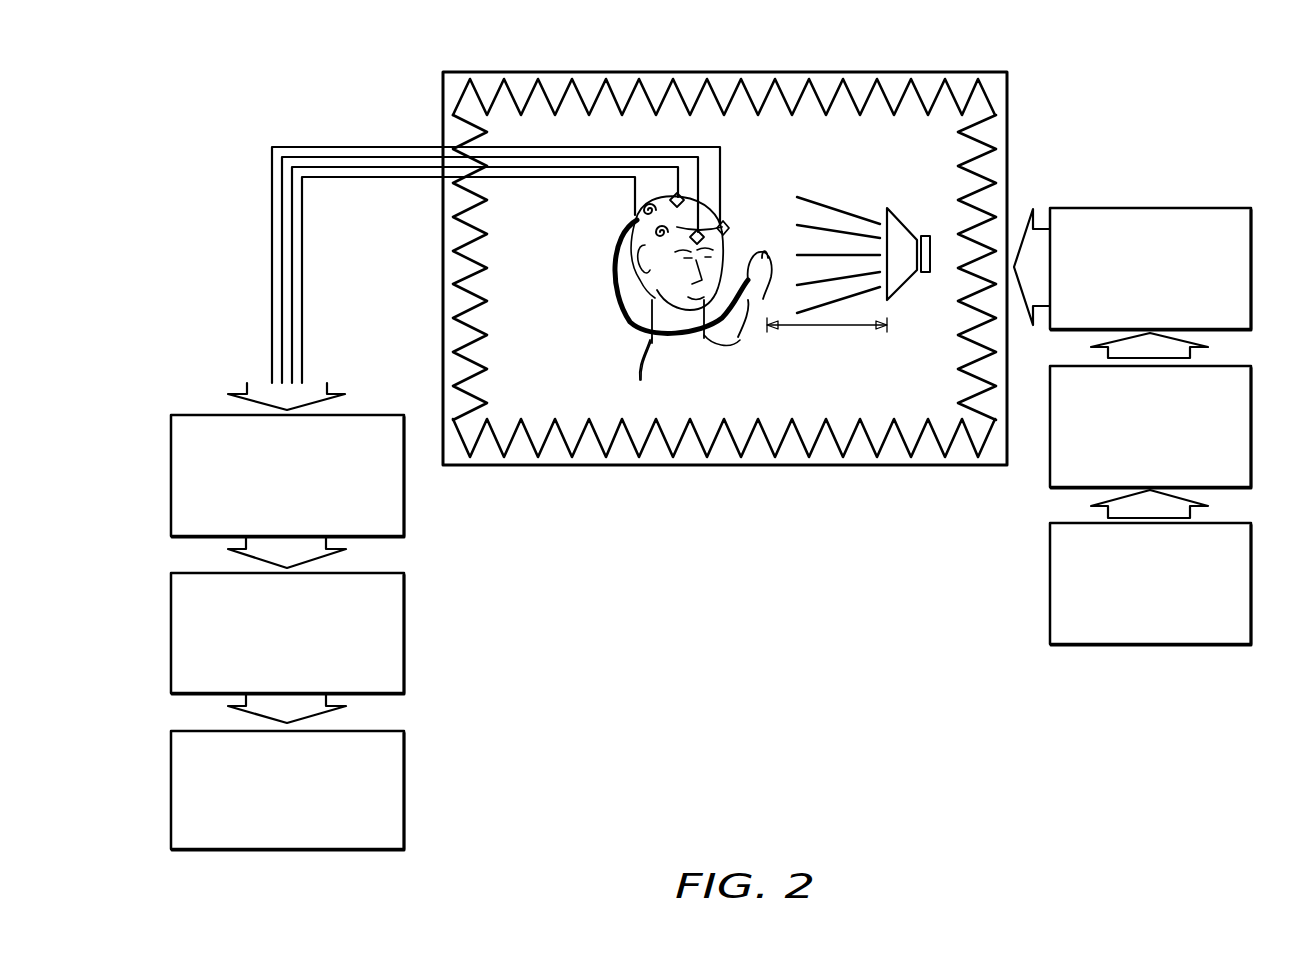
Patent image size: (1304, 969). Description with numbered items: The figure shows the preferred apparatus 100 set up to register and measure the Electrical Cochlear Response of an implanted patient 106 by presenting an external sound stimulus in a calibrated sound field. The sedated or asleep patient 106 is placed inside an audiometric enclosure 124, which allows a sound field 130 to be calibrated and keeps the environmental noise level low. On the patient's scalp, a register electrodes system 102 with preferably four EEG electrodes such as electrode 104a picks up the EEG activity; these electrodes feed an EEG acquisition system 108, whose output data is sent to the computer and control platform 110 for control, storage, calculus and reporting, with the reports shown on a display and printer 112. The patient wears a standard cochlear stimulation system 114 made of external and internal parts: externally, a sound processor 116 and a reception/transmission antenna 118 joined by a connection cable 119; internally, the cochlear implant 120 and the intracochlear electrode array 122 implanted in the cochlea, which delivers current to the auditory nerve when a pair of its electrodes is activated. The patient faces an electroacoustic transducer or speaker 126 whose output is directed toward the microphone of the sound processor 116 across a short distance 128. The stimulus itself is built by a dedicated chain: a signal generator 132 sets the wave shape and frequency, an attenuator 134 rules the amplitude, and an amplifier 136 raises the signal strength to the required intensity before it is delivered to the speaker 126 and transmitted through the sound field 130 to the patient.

The apparatus 100 is at (365, 112).
The register electrodes system 102 is at (704, 189).
The EEG electrode 104a is at (730, 229).
The implanted patient 106 is at (640, 322).
The EEG acquisition system 108 is at (404, 497).
The computer and control platform 110 is at (404, 631).
The display and printer 112 is at (404, 787).
The cochlear stimulation system 114 is at (610, 208).
The sound processor 116 is at (748, 300).
The reception/transmission antenna 118 is at (653, 188).
The connection cable 119 is at (685, 355).
The cochlear implant 120 is at (637, 240).
The intracochlear electrode array 122 is at (659, 260).
The audiometric enclosure 124 is at (960, 60).
The speaker 126 is at (908, 207).
The distance 128 is at (833, 328).
The sound field 130 is at (852, 205).
The signal generator 132 is at (1102, 644).
The attenuator 134 is at (1048, 462).
The amplifier 136 is at (1170, 208).